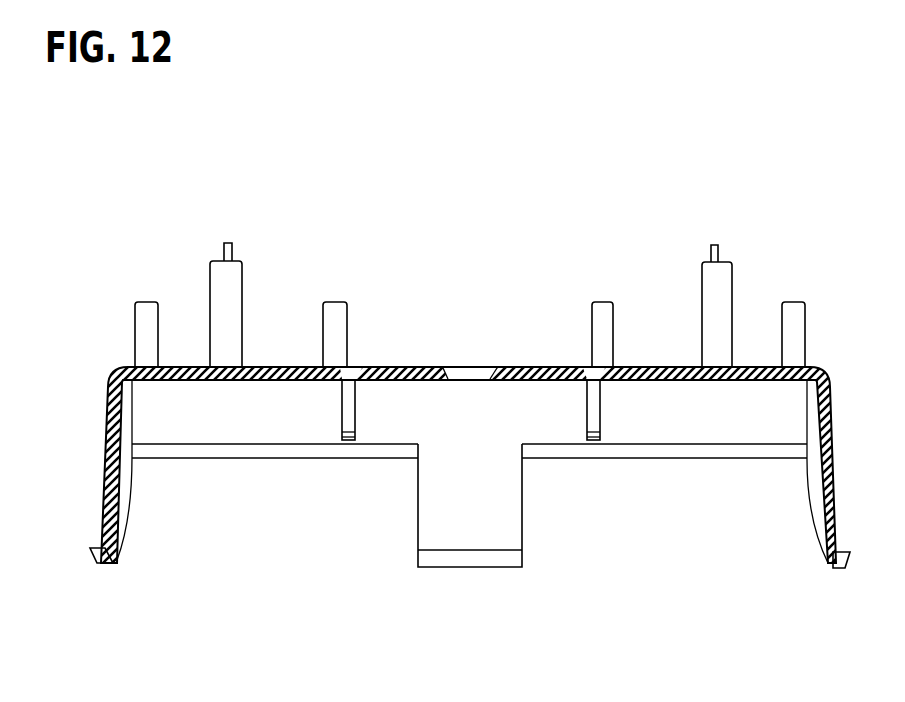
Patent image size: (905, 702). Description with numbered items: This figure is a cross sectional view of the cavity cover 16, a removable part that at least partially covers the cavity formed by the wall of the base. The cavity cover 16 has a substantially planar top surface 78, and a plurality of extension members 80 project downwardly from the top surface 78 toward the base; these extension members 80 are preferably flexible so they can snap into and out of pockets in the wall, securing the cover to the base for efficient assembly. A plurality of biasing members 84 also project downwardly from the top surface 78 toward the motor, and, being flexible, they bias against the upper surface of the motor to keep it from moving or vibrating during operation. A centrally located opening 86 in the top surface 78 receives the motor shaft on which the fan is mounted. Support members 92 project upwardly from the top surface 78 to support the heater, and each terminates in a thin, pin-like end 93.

The cavity cover 16 is at (494, 155).
The top surface 78 is at (658, 367).
The extension members 80 is at (418, 526).
The biasing members 84 is at (585, 410).
The opening 86 is at (467, 373).
The support members 92 is at (207, 261).
The pin-like end 93 is at (229, 243).